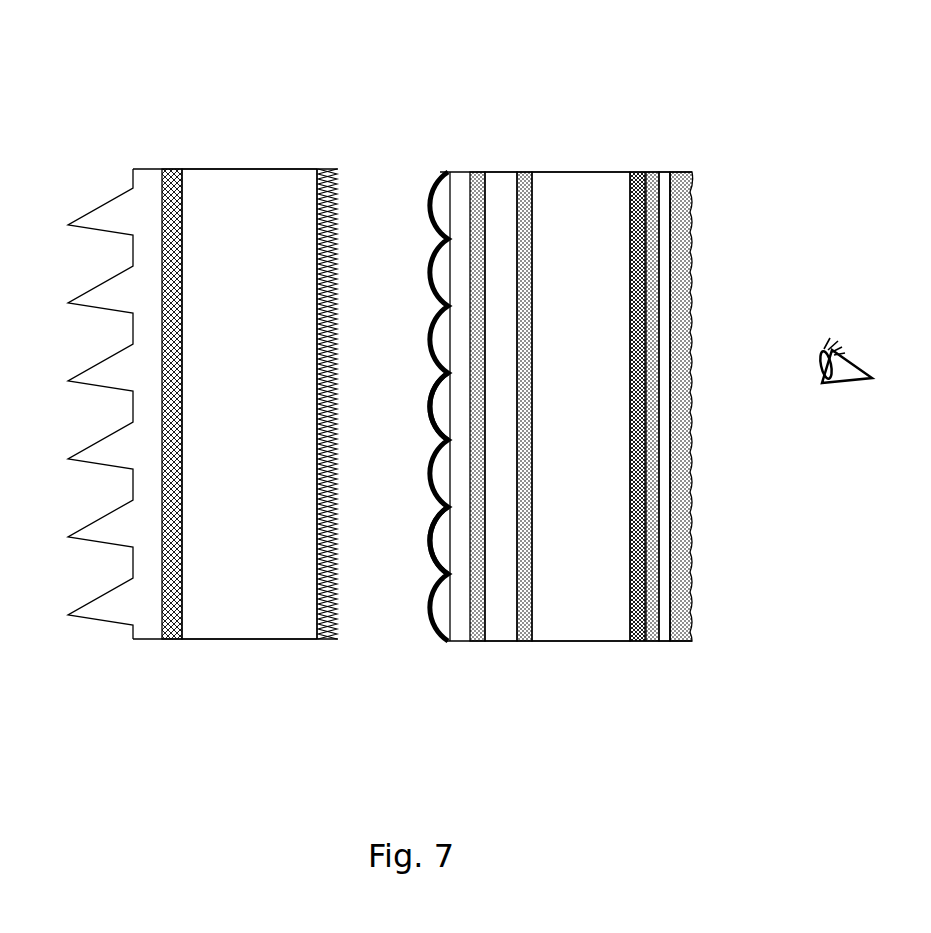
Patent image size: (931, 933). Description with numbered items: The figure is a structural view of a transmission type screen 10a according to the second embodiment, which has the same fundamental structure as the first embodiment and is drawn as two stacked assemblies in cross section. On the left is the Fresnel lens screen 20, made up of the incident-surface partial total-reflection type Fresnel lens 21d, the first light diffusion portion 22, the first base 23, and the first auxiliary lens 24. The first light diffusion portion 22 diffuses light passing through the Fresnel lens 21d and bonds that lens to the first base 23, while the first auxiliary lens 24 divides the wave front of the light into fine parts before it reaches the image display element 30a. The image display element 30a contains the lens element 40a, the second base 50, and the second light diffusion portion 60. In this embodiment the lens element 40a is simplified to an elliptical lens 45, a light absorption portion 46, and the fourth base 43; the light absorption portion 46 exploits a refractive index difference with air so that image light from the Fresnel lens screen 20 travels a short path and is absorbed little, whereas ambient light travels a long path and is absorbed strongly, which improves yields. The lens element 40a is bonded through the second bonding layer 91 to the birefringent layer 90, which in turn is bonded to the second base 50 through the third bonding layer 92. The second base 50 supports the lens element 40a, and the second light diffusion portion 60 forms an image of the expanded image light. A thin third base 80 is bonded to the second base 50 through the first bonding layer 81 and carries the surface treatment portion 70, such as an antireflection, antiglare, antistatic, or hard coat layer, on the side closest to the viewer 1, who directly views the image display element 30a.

The transmission type screen 10a is at (710, 120).
The Fresnel lens screen 20 is at (360, 177).
The incident-surface partial total-reflection type Fresnel lens 21d is at (108, 610).
The first light diffusion portion 22 is at (162, 620).
The first base 23 is at (215, 620).
The first auxiliary lens 24 is at (340, 215).
The image display element 30a is at (703, 145).
The lens element 40a is at (510, 653).
The fourth base 43 is at (453, 622).
The elliptical lens 45 is at (438, 525).
The light absorption portion 46 is at (425, 412).
The second base 50 is at (605, 600).
The second light diffusion portion 60 is at (632, 180).
The surface treatment portion 70 is at (685, 633).
The third base 80 is at (660, 510).
The first bonding layer 81 is at (648, 470).
The birefringent layer 90 is at (500, 613).
The second bonding layer 91 is at (482, 293).
The third bonding layer 92 is at (517, 617).
The viewer 1 is at (845, 354).